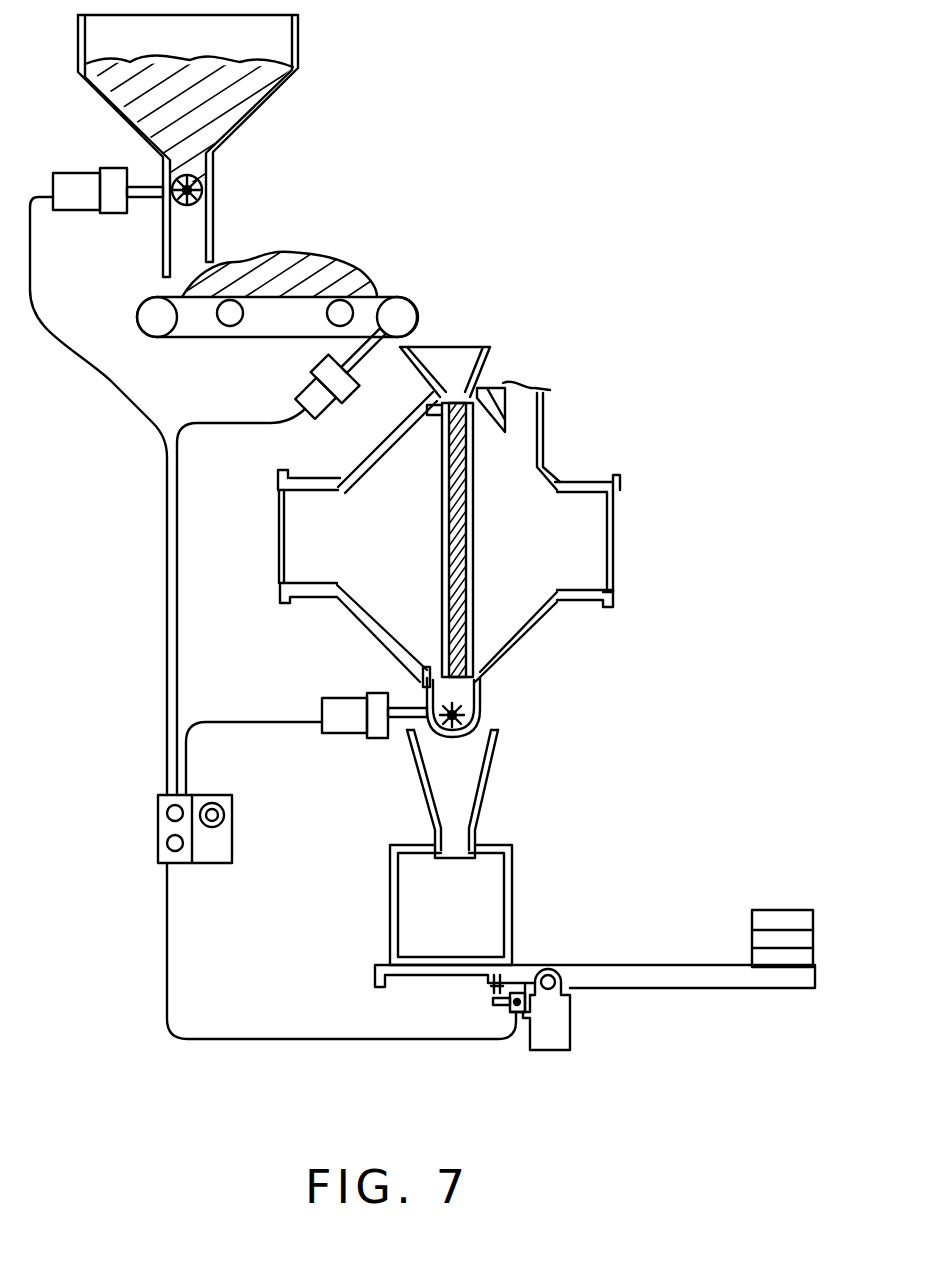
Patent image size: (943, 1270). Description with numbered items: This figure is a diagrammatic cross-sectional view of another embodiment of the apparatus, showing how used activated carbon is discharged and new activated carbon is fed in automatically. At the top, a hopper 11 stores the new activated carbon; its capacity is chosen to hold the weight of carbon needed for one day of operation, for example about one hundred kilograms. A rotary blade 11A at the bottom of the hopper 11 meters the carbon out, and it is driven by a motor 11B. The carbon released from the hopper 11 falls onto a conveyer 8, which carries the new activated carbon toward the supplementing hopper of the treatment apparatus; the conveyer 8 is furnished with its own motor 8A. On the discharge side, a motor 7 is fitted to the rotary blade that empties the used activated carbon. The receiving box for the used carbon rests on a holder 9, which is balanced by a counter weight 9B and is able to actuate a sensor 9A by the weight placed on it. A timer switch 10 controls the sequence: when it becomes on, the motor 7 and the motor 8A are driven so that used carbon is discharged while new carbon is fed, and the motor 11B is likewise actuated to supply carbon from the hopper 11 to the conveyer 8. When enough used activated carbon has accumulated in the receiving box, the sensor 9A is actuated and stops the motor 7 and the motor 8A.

The motor 7 is at (347, 727).
The conveyer 8 is at (210, 338).
The motor 8A is at (307, 407).
The holder 9 is at (608, 975).
The sensor 9A is at (515, 1005).
The counter weight 9B is at (800, 945).
The timer switch 10 is at (218, 850).
The hopper 11 is at (281, 97).
The rotary blade 11A is at (215, 179).
The motor 11B is at (70, 182).